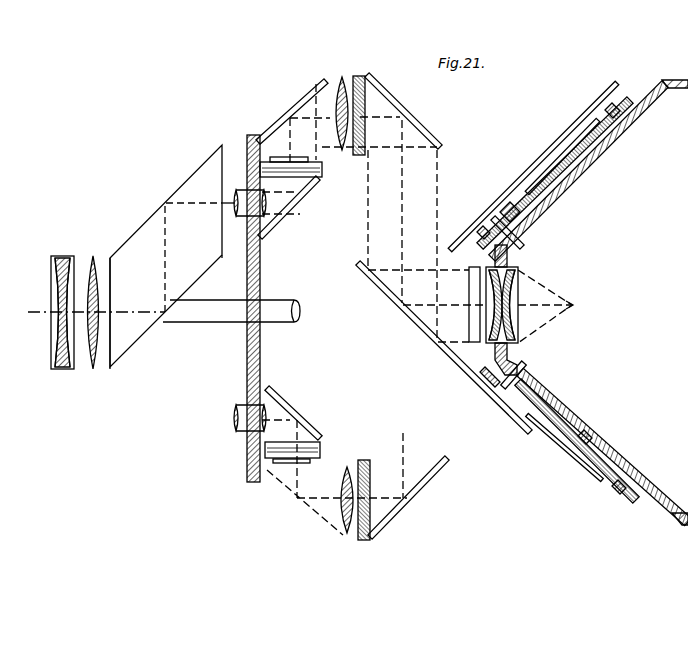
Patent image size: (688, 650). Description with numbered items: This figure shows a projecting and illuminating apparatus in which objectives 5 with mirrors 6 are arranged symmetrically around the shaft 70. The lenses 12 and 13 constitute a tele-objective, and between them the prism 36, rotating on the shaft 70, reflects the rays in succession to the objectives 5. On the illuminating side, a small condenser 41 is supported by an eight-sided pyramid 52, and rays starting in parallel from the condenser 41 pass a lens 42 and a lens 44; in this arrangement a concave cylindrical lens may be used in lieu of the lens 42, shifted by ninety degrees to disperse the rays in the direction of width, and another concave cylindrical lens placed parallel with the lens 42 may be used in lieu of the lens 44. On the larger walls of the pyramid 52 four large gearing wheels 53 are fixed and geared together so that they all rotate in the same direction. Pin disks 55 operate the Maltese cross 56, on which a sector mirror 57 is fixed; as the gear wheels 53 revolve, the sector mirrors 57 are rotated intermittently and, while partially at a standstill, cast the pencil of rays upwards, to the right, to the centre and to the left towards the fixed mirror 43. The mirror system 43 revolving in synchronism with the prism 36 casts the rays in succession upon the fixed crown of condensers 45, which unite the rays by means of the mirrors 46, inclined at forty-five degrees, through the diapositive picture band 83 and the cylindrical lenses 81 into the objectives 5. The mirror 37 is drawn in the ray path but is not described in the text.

The lens 13 is at (58, 262).
The lens 12 is at (93, 258).
The prism 36 is at (193, 272).
The shaft 70 is at (276, 303).
The objective 5 is at (242, 218).
The mirror 6 is at (296, 208).
The cylindrical lens 81 is at (322, 168).
The diapositive picture band 83 is at (285, 157).
The mirror 46 is at (298, 525).
The condenser 45 is at (342, 80).
The lens 44 is at (366, 95).
The mirror system 43 is at (422, 505).
The mirror 37 is at (416, 320).
The lens 42 is at (469, 290).
The condenser 41 is at (515, 288).
The pyramid 52 is at (546, 211).
The sector mirror 57 is at (517, 185).
The pin disk 55 is at (563, 162).
The Maltese cross 56 is at (473, 230).
The gearing wheel 53 is at (588, 481).